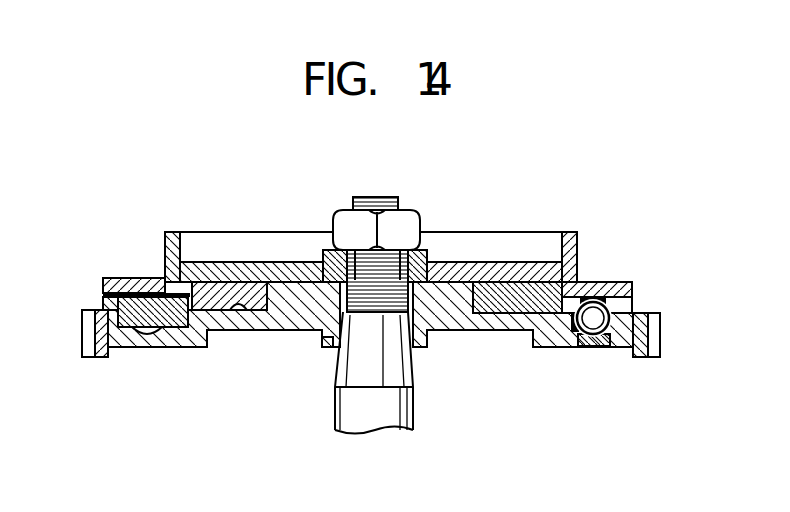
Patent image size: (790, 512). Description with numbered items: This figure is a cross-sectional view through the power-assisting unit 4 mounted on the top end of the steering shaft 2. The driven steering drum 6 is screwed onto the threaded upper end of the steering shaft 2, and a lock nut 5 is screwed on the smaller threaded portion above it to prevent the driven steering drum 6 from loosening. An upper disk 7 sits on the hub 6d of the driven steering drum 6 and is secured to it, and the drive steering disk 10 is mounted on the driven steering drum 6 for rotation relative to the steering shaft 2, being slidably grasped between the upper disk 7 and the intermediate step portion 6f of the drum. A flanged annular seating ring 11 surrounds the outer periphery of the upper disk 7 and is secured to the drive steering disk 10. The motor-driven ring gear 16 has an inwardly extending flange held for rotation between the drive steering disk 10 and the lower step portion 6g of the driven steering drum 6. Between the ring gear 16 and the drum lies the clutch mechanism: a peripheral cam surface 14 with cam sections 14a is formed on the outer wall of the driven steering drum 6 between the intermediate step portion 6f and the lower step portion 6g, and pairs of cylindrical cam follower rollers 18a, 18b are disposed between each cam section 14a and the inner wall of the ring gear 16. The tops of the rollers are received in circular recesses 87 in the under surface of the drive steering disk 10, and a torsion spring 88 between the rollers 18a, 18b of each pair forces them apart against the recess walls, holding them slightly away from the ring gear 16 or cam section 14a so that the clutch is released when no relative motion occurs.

The steering shaft 2 is at (403, 420).
The power-assisting unit 4 is at (467, 226).
The lock nut 5 is at (413, 198).
The driven steering drum 6 is at (288, 318).
The hub 6d is at (332, 336).
The intermediate step portion 6f is at (243, 312).
The lower step portion 6g is at (178, 348).
The upper disk 7 is at (505, 270).
The drive steering disk 10 is at (213, 290).
The flanged annular seating ring 11 is at (623, 288).
The peripheral cam surface 14 is at (208, 348).
The cam section 14a is at (560, 305).
The ring gear 16 is at (637, 362).
The cam follower roller 18a is at (613, 340).
The cam follower roller 18b is at (133, 290).
The circular recess 87 is at (113, 278).
The torsion spring 88 is at (573, 346).